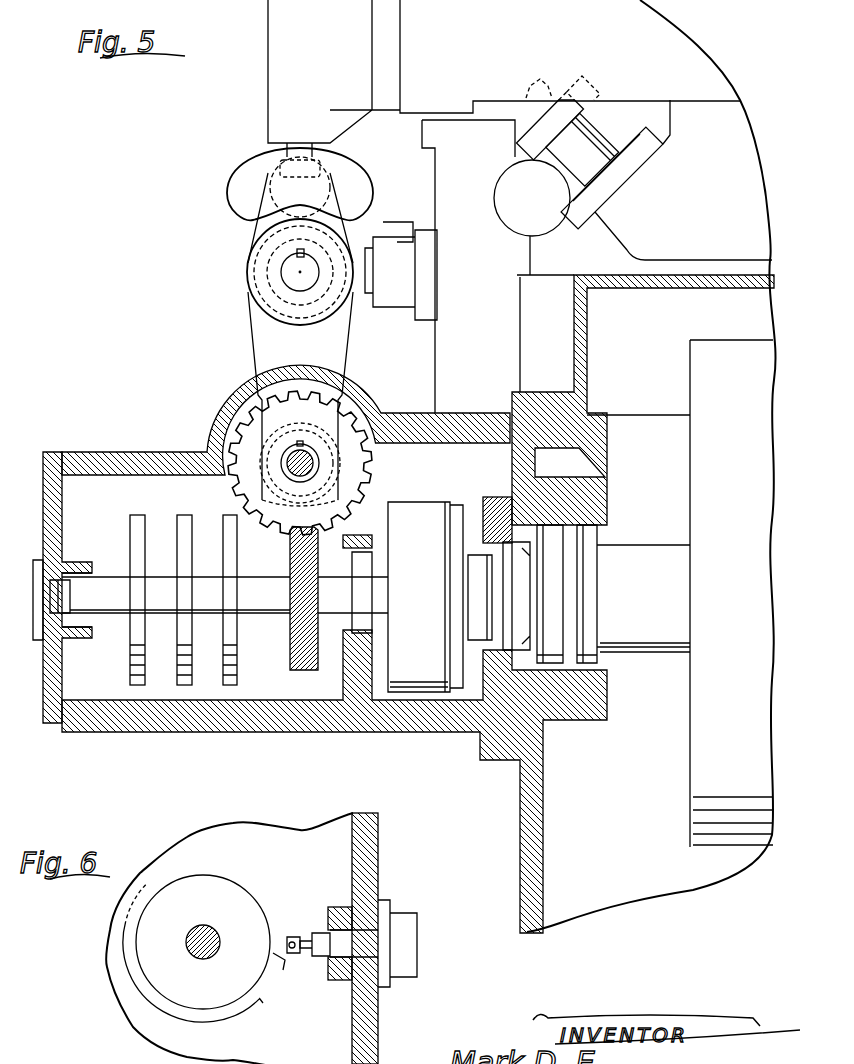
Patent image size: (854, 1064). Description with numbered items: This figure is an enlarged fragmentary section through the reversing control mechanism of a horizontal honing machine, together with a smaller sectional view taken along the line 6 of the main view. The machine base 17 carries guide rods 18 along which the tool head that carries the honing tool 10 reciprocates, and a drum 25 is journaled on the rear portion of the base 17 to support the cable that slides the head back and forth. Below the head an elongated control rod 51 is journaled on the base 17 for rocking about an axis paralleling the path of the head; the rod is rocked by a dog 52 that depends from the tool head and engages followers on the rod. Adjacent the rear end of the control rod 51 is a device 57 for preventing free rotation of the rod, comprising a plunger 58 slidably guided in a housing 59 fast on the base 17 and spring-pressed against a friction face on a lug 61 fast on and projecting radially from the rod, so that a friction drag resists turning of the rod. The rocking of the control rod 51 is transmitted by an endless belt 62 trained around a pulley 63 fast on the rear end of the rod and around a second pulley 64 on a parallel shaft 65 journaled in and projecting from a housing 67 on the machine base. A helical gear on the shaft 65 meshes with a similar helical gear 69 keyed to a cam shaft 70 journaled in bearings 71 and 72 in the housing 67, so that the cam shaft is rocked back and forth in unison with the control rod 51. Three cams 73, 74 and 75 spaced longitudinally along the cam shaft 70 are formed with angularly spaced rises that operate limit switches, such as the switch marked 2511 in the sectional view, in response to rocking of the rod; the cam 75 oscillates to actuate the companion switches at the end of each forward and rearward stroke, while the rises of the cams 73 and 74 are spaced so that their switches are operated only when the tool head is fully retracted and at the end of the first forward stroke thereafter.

In FIG. 5, the section line 6— 6 is at (150, 427).
In FIG. 5, the honing tool 10 is at (326, 105).
In FIG. 5, the machine base 17 is at (445, 368).
In FIG. 5, the guide rods 18 is at (545, 225).
In FIG. 5, the drum 25 is at (690, 738).
In FIG. 5, the control rod 51 is at (305, 285).
In FIG. 5, the dog 52 is at (270, 170).
In FIG. 5, the device for preventing free rotation of the rod 57 is at (210, 188).
In FIG. 5, the plunger 58 is at (335, 167).
In FIG. 5, the housing 59 is at (388, 222).
In FIG. 5, the lug 61 is at (247, 230).
In FIG. 5, the endless belt 62 is at (250, 332).
In FIG. 5, the pulley 63 is at (258, 309).
In FIG. 5, the second pulley 64 is at (296, 503).
In FIG. 5, the shaft 65 is at (310, 444).
In FIG. 5, the housing 67 is at (76, 458).
In FIG. 5, the helical gear 69 is at (312, 577).
In FIG. 5, the cam shaft 70 is at (260, 587).
In FIG. 6, the cam shaft 70 is at (207, 932).
In FIG. 5, the bearing 71 is at (80, 575).
In FIG. 5, the bearing 72 is at (562, 580).
In FIG. 5, the cam 73 is at (130, 665).
In FIG. 6, the cam 73 is at (270, 900).
In FIG. 5, the cam 74 is at (178, 663).
In FIG. 6, the cam 74 is at (285, 963).
In FIG. 5, the cam 75 is at (226, 663).
In FIG. 6, the cam 75 is at (258, 1002).
In FIG. 6, the limit switch 2511 is at (417, 953).